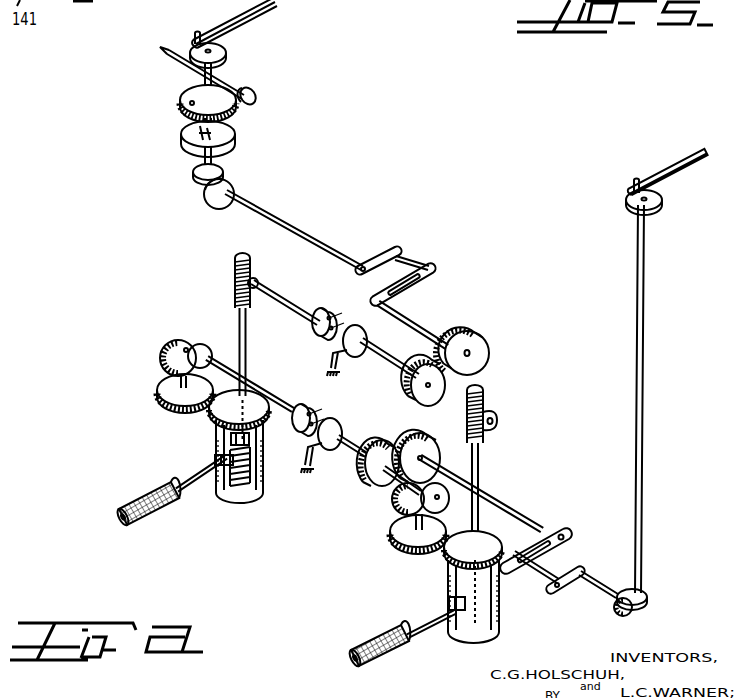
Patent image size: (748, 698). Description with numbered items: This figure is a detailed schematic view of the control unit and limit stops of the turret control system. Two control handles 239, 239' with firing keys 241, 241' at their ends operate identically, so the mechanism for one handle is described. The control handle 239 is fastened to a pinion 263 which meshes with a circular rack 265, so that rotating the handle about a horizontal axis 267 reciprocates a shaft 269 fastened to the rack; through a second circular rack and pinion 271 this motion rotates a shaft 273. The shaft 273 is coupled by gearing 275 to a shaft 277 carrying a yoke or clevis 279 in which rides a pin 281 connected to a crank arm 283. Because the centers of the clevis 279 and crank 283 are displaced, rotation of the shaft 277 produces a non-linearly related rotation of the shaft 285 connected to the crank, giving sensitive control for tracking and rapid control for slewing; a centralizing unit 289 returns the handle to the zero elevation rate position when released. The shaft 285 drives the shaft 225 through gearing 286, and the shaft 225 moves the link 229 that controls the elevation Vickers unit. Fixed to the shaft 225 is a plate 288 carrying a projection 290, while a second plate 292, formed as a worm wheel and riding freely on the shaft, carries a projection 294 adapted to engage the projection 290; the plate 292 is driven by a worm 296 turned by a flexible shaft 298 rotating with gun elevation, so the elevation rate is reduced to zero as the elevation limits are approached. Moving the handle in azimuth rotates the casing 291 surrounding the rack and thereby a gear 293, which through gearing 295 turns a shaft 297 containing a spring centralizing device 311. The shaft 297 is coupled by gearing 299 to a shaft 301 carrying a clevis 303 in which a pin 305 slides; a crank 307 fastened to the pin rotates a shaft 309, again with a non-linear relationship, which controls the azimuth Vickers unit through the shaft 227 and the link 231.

The shaft 225 is at (182, 82).
The shaft 227 is at (642, 458).
The link 229 is at (244, 23).
The link 231 is at (675, 170).
The control handle 239 is at (171, 496).
The control handle 239' is at (401, 643).
The firing key 241 is at (114, 536).
The firing key 241' is at (335, 672).
The pinion 263 is at (215, 458).
The circular rack 265 is at (257, 438).
The horizontal axis 267 is at (257, 478).
The shaft 269 is at (246, 337).
The second circular rack and pinion 271 is at (250, 263).
The shaft 273 is at (287, 293).
The gearing 275 is at (443, 333).
The shaft 277 is at (407, 312).
The yoke or clevis 279 is at (437, 272).
The pin 281 is at (408, 262).
The crank arm 283 is at (370, 250).
The shaft 285 is at (300, 230).
The gearing 286 is at (213, 188).
The plate 288 is at (230, 134).
The centralizing unit 289 is at (326, 345).
The projection 290 is at (193, 158).
The casing 291 is at (216, 440).
The second plate 292 is at (184, 108).
The gear 293 is at (212, 412).
The projection 294 is at (190, 132).
The gearing 295 is at (188, 337).
The worm 296 is at (256, 91).
The shaft 297 is at (267, 393).
The flexible shaft 298 is at (170, 50).
The gearing 299 is at (403, 438).
The shaft 301 is at (524, 515).
The clevis 303 is at (540, 527).
The pin 305 is at (548, 563).
The crank 307 is at (554, 593).
The shaft 309 is at (594, 595).
The spring centralizing device 311 is at (332, 416).